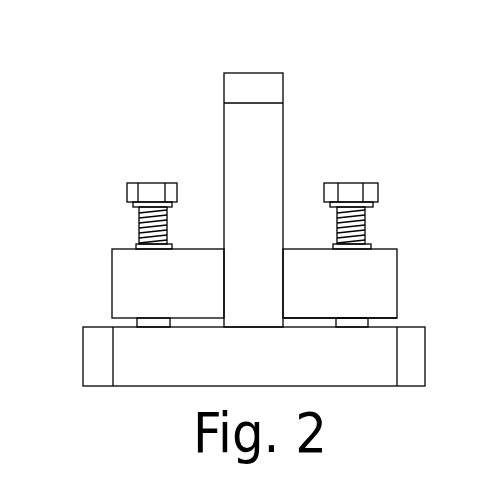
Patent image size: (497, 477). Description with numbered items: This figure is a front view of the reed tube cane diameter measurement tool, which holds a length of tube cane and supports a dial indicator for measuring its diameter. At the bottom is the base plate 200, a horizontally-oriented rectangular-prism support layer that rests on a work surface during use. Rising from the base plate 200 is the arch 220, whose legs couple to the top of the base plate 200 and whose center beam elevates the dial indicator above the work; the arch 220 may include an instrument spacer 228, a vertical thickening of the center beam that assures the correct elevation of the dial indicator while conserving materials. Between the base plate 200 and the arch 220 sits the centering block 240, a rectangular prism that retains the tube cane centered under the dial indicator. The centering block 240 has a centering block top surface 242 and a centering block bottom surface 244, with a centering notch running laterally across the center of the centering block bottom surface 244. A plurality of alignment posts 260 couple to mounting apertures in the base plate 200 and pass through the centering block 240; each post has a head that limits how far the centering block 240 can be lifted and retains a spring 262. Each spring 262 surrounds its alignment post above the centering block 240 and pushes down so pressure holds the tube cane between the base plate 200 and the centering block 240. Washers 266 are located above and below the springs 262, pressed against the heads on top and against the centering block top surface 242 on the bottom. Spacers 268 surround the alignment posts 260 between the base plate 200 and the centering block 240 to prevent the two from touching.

The base plate 200 is at (160, 362).
The arch 220 is at (232, 120).
The instrument spacer 228 is at (276, 90).
The centering block 240 is at (122, 268).
The centering block top surface 242 is at (387, 248).
The centering block bottom surface 244 is at (299, 319).
The alignment posts 260 is at (173, 198).
The spring 262 is at (138, 222).
The washers 266 is at (128, 200).
The spacers 268 is at (137, 323).